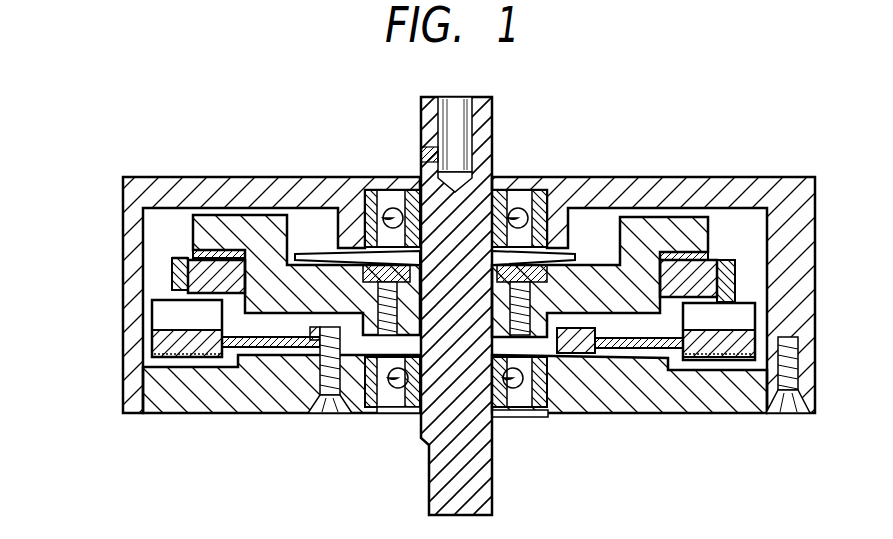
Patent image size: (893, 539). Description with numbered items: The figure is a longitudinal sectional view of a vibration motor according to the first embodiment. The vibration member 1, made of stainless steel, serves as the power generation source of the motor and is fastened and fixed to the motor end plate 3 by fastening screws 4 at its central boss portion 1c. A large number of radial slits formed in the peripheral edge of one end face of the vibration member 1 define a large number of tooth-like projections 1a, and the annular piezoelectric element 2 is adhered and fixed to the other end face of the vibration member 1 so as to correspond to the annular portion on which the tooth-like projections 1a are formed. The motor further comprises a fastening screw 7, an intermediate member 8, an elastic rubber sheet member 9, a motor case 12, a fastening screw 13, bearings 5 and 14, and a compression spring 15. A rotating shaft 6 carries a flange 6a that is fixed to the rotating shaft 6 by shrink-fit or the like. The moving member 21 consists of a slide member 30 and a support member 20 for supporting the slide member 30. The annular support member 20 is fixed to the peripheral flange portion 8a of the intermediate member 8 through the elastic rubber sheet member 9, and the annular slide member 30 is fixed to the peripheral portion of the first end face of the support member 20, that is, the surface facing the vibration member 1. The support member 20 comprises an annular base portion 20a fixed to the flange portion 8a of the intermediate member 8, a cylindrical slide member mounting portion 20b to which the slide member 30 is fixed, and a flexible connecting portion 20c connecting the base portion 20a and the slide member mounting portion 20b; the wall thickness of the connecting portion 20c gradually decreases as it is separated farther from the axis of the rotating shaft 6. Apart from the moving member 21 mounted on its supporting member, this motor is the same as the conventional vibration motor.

The vibration member 1 is at (150, 330).
The tooth-like projections 1a is at (742, 320).
The central boss portion 1c is at (338, 385).
The piezoelectric element 2 is at (177, 390).
The motor end plate 3 is at (213, 393).
The fastening screws 4 is at (335, 407).
The bearing 5 is at (510, 415).
The rotating shaft 6 is at (475, 460).
The flange 6a is at (550, 405).
The fastening screw 7 is at (338, 268).
The intermediate member 8 is at (235, 222).
The peripheral flange portion 8a is at (215, 221).
The elastic rubber sheet member 9 is at (185, 258).
The motor case 12 is at (805, 216).
The fastening screw 13 is at (788, 418).
The bearing 14 is at (389, 212).
The compression spring 15 is at (588, 253).
The support member 20 is at (165, 268).
The annular base portion 20a is at (245, 320).
The cylindrical slide member mounting portion 20b is at (180, 257).
The flexible connecting portion 20c is at (132, 350).
The moving member 21 is at (161, 296).
The slide member 30 is at (175, 300).